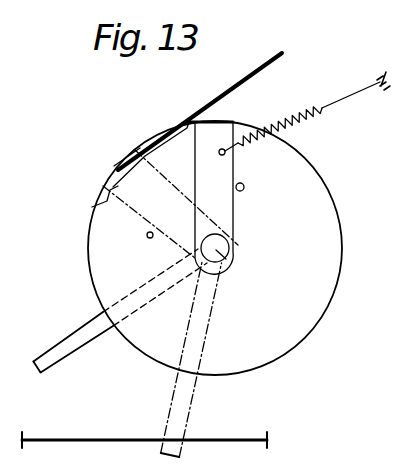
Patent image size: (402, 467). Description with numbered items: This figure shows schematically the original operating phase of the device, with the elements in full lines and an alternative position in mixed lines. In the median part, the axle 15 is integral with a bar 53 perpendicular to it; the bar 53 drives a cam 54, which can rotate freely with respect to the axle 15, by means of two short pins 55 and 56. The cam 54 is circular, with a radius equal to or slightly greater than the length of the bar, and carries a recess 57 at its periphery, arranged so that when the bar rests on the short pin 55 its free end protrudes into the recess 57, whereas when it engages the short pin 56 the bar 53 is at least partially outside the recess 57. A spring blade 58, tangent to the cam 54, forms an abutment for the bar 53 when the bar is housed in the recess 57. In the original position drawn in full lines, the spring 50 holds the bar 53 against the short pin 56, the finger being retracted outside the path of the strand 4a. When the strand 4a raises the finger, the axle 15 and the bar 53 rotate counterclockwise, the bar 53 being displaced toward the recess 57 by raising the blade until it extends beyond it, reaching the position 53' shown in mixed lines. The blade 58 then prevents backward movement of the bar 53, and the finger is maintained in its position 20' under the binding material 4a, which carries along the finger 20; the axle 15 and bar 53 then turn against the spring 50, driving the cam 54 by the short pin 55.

The spring blade 58 is at (257, 67).
The spring 50 is at (300, 112).
The short pin 56 is at (244, 185).
The cam 54 is at (320, 228).
The bar 53 is at (248, 198).
The bar position 53' is at (164, 179).
The recess 57 is at (100, 197).
The short pin 55 is at (147, 236).
The finger 20 is at (120, 310).
The axle 15 is at (224, 256).
The finger position 20' is at (208, 359).
The strand 4a is at (87, 435).